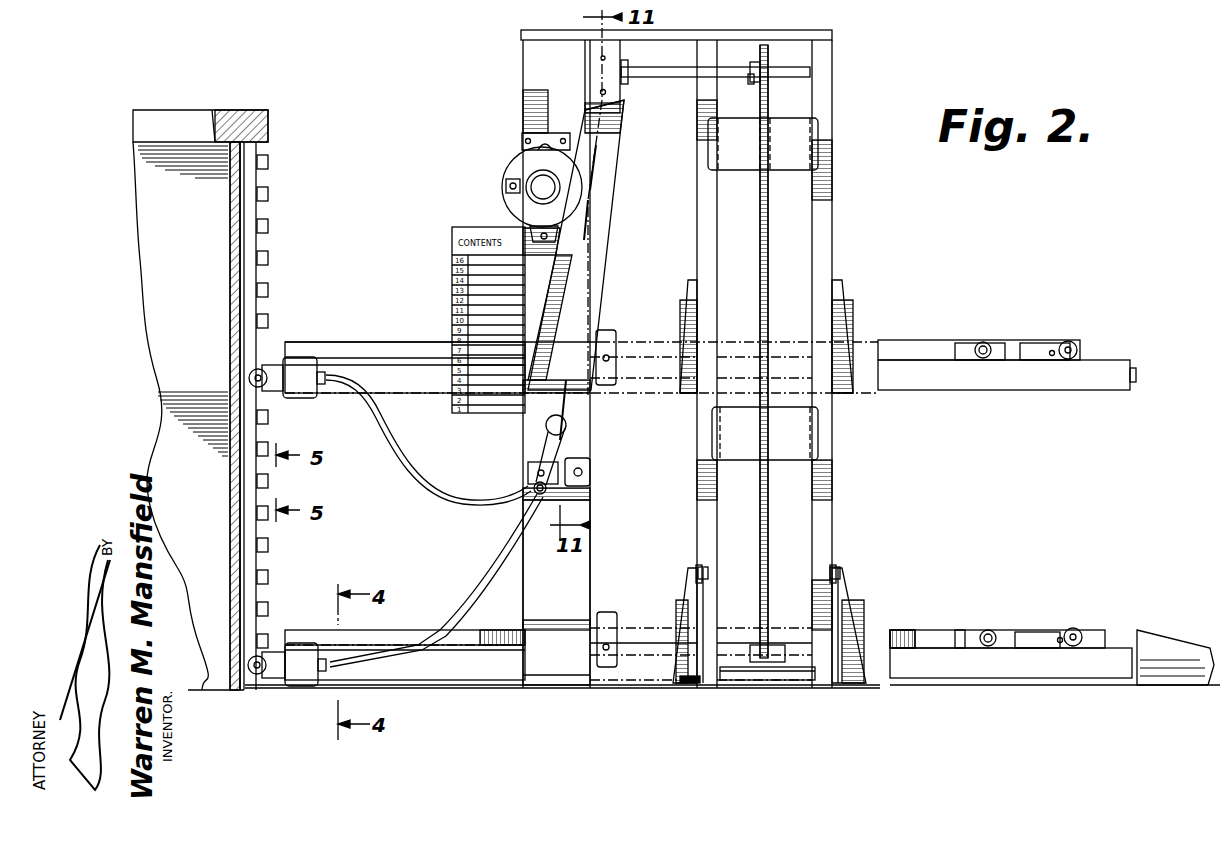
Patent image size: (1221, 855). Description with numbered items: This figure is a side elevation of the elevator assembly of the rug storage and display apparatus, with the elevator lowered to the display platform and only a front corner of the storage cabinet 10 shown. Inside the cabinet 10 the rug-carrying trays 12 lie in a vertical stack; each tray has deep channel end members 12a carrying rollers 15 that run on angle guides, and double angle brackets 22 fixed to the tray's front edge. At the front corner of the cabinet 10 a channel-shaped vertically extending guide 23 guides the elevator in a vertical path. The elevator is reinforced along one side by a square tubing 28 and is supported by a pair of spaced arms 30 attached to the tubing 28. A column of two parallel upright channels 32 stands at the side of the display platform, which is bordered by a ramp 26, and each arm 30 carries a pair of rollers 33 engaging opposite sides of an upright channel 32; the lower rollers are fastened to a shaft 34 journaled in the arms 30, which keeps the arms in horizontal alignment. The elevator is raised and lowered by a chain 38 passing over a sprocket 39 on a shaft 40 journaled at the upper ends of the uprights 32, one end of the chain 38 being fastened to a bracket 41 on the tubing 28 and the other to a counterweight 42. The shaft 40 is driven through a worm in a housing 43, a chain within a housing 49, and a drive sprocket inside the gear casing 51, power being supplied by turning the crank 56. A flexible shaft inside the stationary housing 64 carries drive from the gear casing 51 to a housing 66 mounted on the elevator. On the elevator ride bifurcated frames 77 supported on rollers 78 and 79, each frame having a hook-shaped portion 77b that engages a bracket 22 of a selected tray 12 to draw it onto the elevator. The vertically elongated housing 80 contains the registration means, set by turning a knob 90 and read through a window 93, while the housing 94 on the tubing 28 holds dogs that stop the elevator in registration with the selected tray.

The storage cabinet 10 is at (150, 183).
The rug-carrying tray 12 is at (390, 342).
The end member 12a is at (382, 635).
The roller 15 is at (910, 655).
The double angle bracket 22 is at (268, 222).
The vertically extending guide 23 is at (242, 258).
The ramp 26 is at (1172, 632).
The square tubing 28 is at (990, 393).
The arm 30 is at (851, 332).
The upright channel 32 is at (700, 507).
The roller 33 is at (707, 572).
The shaft 34 is at (766, 670).
The chain 38 is at (767, 265).
The sprocket 39 is at (753, 80).
The shaft 40 is at (795, 78).
The bracket 41 is at (780, 645).
The counterweight 42 is at (720, 158).
The housing 43 is at (593, 70).
The housing 49 is at (598, 244).
The gear casing 51 is at (580, 427).
The crank 56 is at (548, 446).
The stationary housing 64 is at (463, 595).
The housing 66 is at (310, 398).
The bifurcated frame 77 is at (1030, 342).
The hook-shaped portion 77b is at (958, 630).
The roller 78 is at (988, 630).
The roller 79 is at (1076, 630).
The vertically elongated housing 80 is at (548, 600).
The knob 90 is at (540, 185).
The window 93 is at (505, 186).
The housing 94 is at (612, 332).